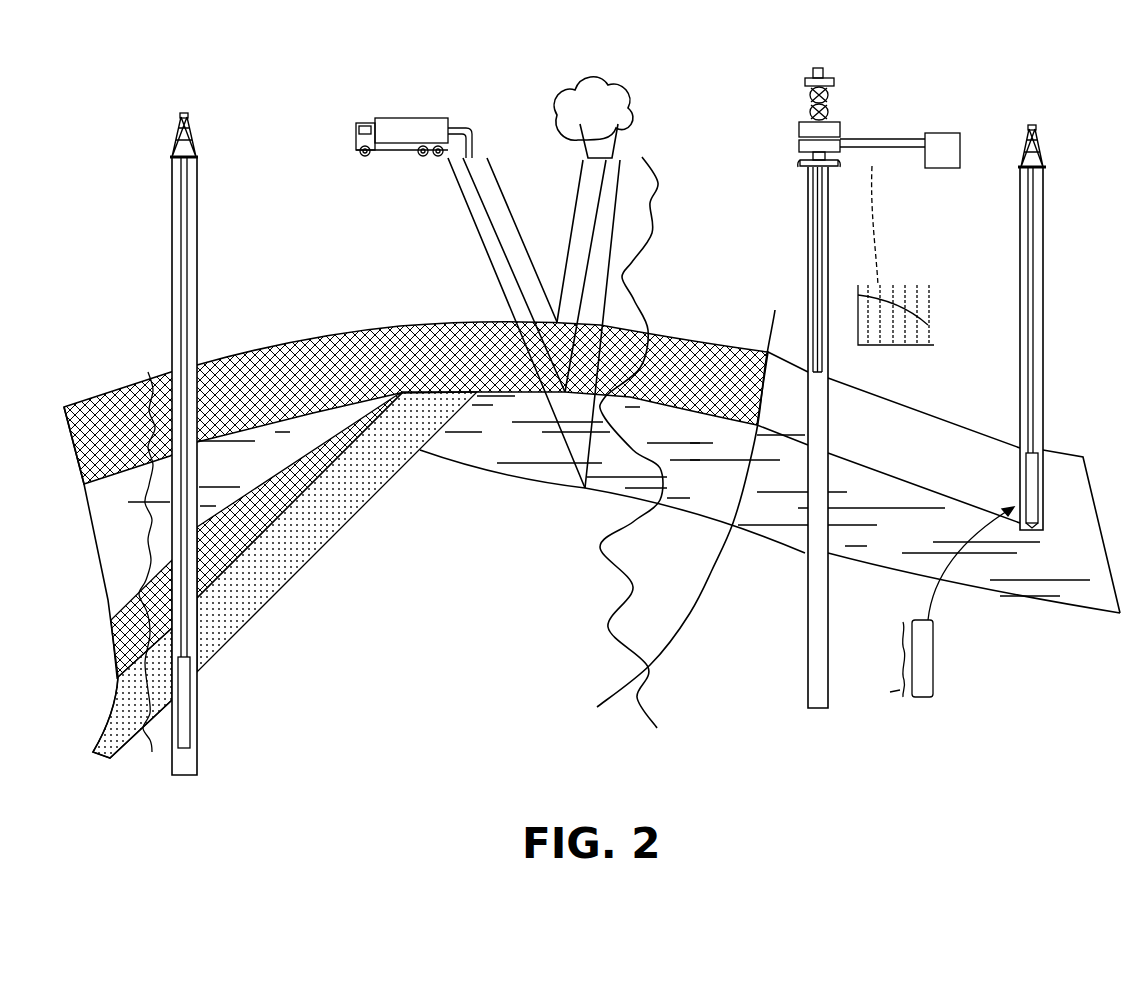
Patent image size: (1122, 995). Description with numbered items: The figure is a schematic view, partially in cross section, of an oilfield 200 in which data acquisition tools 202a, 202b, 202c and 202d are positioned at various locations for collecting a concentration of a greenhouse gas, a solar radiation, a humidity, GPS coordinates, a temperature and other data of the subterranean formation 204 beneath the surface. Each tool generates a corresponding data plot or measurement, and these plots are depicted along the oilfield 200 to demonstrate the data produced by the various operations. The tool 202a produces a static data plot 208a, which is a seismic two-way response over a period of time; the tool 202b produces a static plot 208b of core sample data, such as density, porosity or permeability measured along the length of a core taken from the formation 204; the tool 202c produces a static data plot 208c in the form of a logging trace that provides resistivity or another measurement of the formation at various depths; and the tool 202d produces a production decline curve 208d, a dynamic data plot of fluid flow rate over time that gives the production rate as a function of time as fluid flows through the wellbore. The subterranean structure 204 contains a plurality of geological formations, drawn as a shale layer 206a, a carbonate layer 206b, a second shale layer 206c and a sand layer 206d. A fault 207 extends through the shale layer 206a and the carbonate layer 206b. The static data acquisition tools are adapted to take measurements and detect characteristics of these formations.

The oilfield 200 is at (990, 128).
The data acquisition tool 202a is at (380, 117).
The data acquisition tool 202b is at (1043, 508).
The data acquisition tool 202c is at (190, 708).
The data acquisition tool 202d is at (806, 417).
The subterranean formation 204 is at (470, 560).
The shale layer 206a is at (405, 376).
The carbonate layer 206b is at (244, 473).
The shale layer 206c is at (302, 491).
The sand layer 206d is at (358, 506).
The fault 207 is at (773, 315).
The static data plot 208a is at (628, 597).
The static data plot 208b is at (900, 633).
The static data plot 208c is at (150, 507).
The production decline curve 208d is at (890, 346).